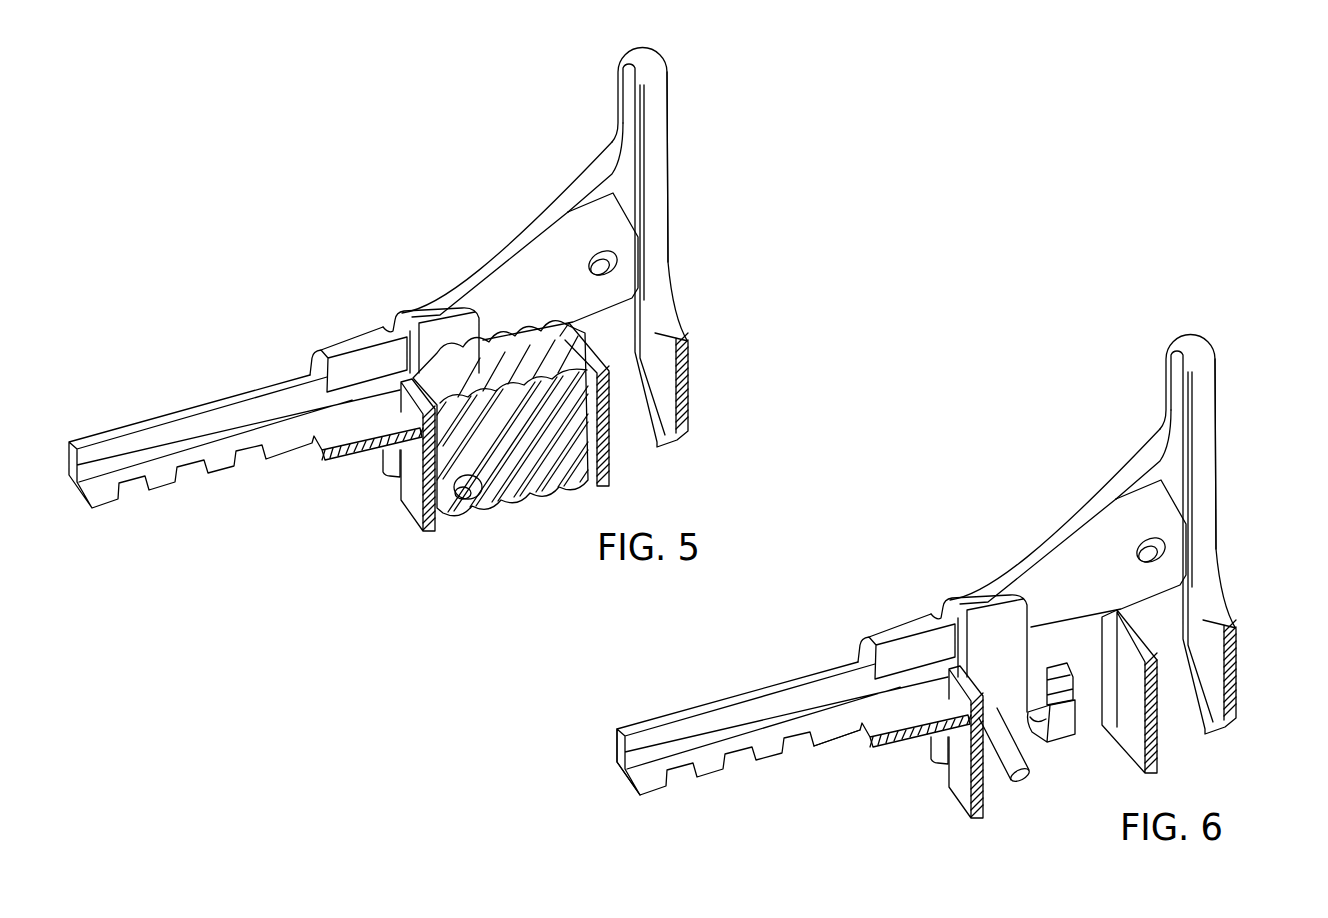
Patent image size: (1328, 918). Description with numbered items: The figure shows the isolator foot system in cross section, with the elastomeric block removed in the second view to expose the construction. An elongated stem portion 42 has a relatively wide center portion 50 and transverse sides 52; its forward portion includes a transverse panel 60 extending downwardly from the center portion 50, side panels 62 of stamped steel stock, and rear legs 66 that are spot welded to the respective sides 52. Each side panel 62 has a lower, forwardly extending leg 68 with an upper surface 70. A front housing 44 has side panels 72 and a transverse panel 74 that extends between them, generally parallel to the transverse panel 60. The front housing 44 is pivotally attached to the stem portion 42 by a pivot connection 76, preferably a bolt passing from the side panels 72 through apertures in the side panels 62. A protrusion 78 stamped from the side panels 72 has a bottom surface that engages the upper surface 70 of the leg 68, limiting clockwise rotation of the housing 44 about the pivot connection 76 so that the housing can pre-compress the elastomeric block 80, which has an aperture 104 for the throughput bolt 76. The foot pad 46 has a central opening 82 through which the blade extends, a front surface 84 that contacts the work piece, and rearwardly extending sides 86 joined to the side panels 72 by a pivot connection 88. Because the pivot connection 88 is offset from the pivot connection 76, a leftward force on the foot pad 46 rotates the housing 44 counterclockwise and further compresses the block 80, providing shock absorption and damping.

In FIG. 5, the stem portion 42 is at (147, 402).
In FIG. 6, the stem portion 42 is at (781, 718).
In FIG. 5, the front housing 44 is at (520, 228).
In FIG. 6, the front housing 44 is at (1068, 515).
In FIG. 5, the foot pad 46 is at (688, 248).
In FIG. 6, the foot pad 46 is at (1236, 535).
In FIG. 6, the center portion 50 is at (863, 747).
In FIG. 6, the transverse sides 52 is at (621, 740).
In FIG. 5, the transverse panel 60 is at (408, 488).
In FIG. 6, the transverse panel 60 is at (937, 742).
In FIG. 5, the side panels 62 is at (437, 333).
In FIG. 6, the side panels 62 is at (979, 631).
In FIG. 5, the rear legs 66 is at (362, 372).
In FIG. 6, the rear legs 66 is at (906, 632).
In FIG. 6, the lower forwardly extending leg 68 is at (1057, 751).
In FIG. 6, the upper surface 70 is at (1047, 746).
In FIG. 5, the side panels 72 is at (522, 296).
In FIG. 6, the side panels 72 is at (1108, 553).
In FIG. 5, the transverse panel 74 is at (598, 448).
In FIG. 6, the transverse panel 74 is at (1160, 691).
In FIG. 6, the pivot connection 76 is at (1013, 773).
In FIG. 6, the protrusion 78 is at (1068, 660).
In FIG. 5, the elastomeric block 80 is at (500, 447).
In FIG. 5, the central opening 82 is at (657, 167).
In FIG. 6, the central opening 82 is at (1230, 547).
In FIG. 5, the front surface 84 is at (671, 128).
In FIG. 6, the front surface 84 is at (1251, 454).
In FIG. 5, the rearwardly extending sides 86 is at (618, 175).
In FIG. 6, the rearwardly extending sides 86 is at (1143, 451).
In FIG. 5, the pivot connection 88 is at (592, 252).
In FIG. 6, the pivot connection 88 is at (1131, 557).
In FIG. 5, the aperture 104 is at (472, 502).